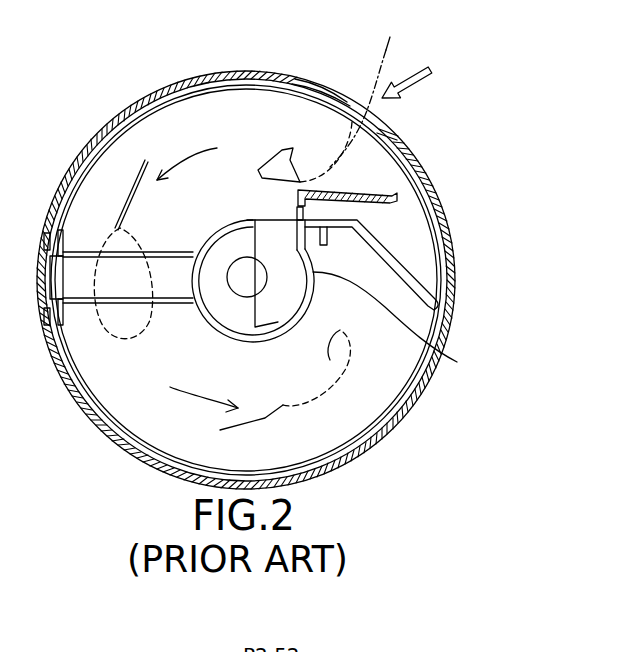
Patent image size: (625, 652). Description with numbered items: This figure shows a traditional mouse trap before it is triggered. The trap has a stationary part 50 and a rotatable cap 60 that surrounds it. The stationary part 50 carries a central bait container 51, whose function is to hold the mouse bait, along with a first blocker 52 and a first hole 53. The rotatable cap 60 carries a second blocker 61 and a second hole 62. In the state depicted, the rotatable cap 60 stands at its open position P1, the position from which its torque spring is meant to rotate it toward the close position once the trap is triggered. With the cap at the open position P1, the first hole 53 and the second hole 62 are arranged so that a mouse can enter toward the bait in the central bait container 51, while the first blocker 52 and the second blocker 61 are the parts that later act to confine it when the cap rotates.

The stationary part 50 is at (423, 392).
The central bait container 51 is at (457, 362).
The first blocker 52 is at (403, 273).
The first hole 53 is at (337, 103).
The rotatable cap 60 is at (457, 233).
The second blocker 61 is at (367, 190).
The second hole 62 is at (397, 134).
The open position P1 is at (197, 73).